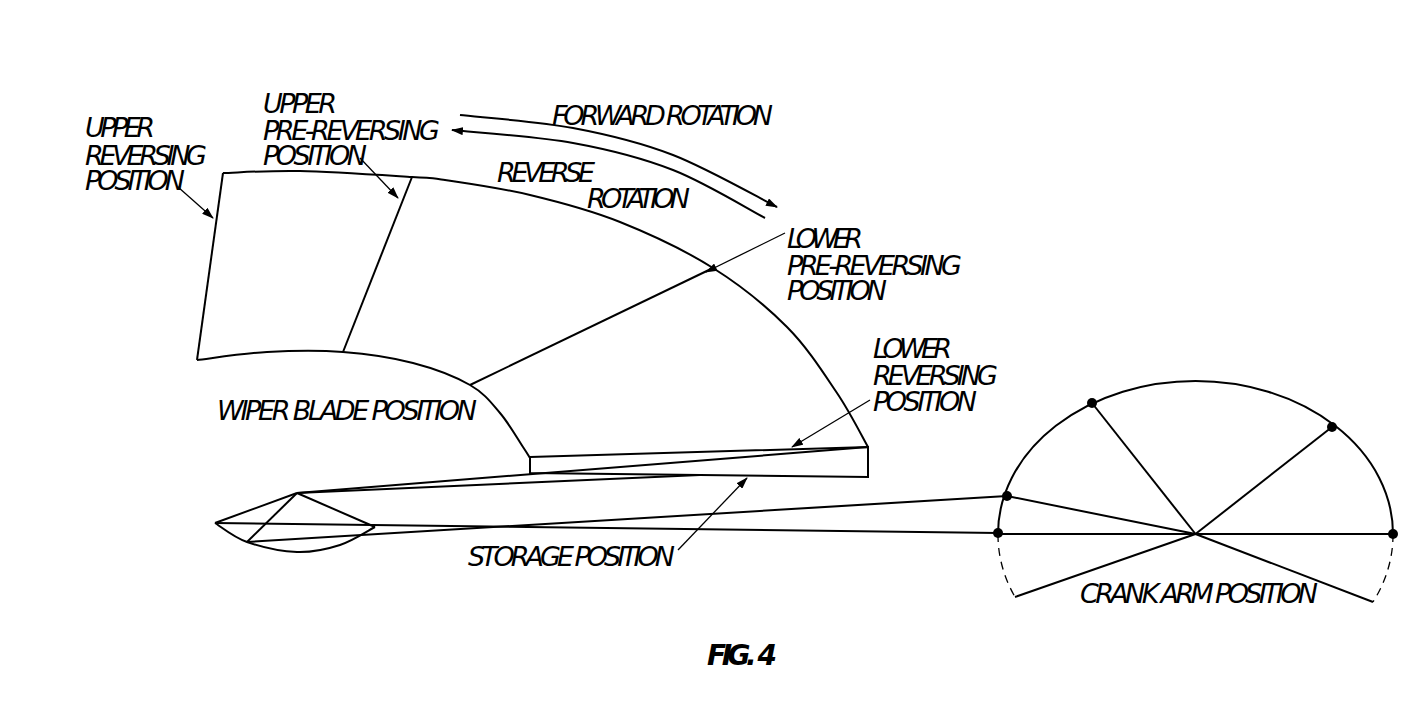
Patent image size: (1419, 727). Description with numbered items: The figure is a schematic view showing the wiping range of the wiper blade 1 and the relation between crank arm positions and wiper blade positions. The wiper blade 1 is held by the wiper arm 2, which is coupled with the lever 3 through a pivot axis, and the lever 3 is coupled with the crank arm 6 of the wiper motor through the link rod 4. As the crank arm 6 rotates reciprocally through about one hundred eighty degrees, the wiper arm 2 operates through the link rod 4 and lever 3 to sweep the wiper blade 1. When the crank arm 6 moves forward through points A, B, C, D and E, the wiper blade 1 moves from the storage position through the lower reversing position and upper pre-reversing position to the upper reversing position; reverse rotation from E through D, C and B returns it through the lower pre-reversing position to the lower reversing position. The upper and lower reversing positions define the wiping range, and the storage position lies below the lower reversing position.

The wiper blade 1 is at (699, 477).
The wiper arm 2 is at (582, 484).
The lever 3 is at (290, 513).
The link rod 4 is at (611, 532).
The crank arm 6 is at (1198, 485).